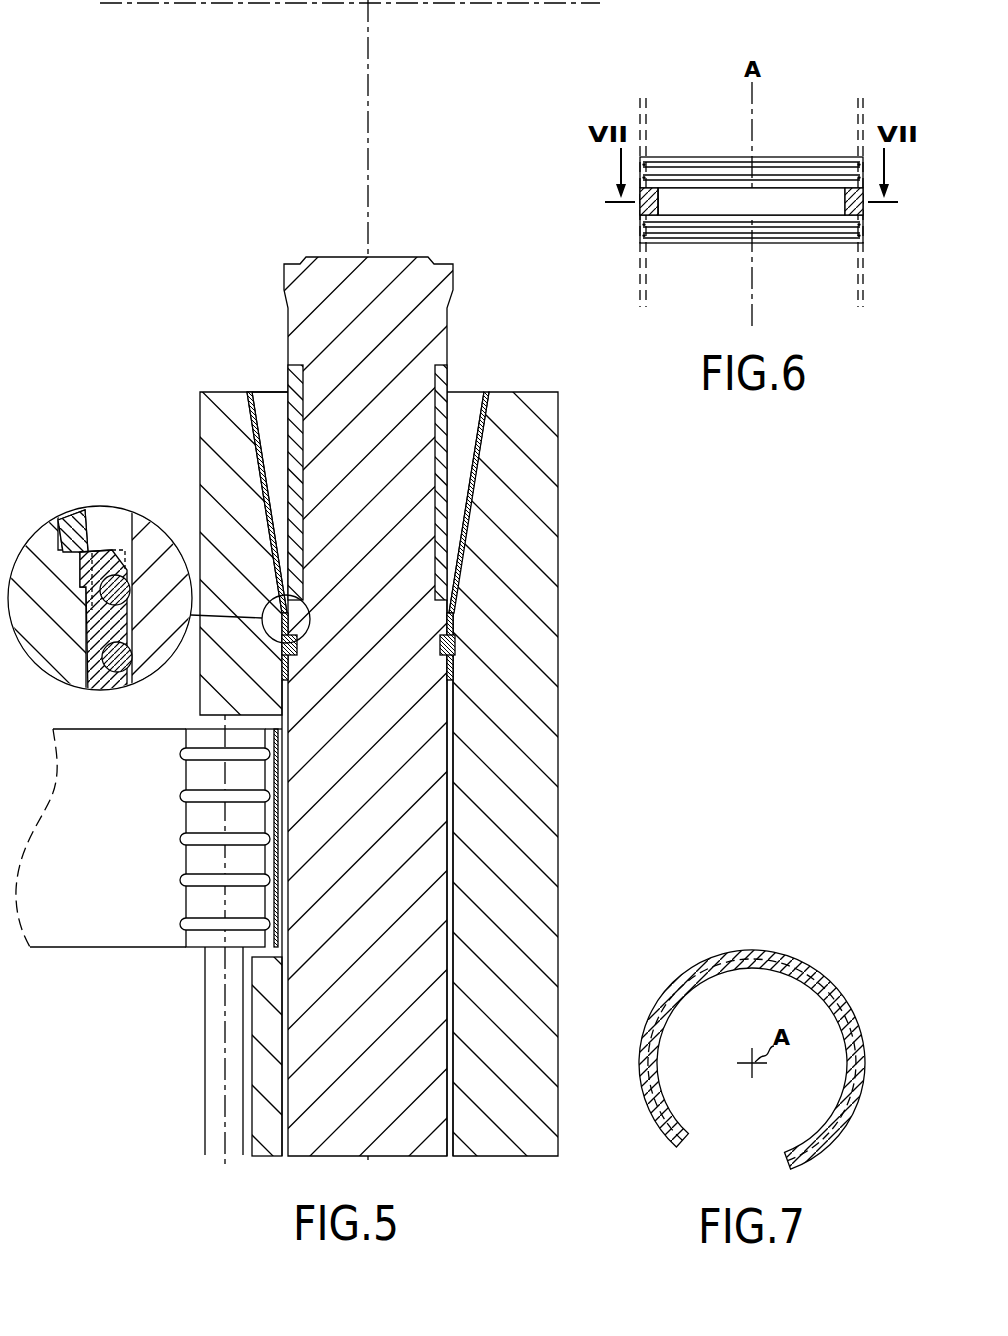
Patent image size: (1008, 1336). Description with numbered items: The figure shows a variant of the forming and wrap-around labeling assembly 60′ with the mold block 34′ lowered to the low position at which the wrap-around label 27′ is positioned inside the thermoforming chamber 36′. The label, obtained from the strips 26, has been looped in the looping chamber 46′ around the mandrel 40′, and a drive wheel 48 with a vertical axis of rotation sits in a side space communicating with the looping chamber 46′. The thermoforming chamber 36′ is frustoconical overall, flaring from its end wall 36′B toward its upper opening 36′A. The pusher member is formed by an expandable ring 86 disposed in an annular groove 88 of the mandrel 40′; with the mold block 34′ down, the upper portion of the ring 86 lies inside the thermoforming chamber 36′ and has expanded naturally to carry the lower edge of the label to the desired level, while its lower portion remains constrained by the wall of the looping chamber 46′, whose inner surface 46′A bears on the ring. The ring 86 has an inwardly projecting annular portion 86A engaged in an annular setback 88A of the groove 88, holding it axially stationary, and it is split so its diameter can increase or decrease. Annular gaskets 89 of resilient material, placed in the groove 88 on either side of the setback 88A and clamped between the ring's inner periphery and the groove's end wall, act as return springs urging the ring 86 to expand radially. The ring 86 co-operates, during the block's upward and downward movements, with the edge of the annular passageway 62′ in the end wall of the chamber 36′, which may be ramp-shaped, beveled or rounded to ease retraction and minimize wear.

In FIG. 5, the forming and wrap-around labeling assembly 60′ is at (203, 232).
In FIG. 5, the mandrel 40′ is at (318, 256).
In FIG. 5, the mold block 34′ is at (212, 423).
In FIG. 5, the thermoforming chamber 36′ is at (468, 392).
In FIG. 5, the upper opening 36′A is at (272, 392).
In FIG. 5, the end wall 36′B is at (454, 623).
In FIG. 5, the looping chamber 46′ is at (453, 812).
In FIG. 5, the inner surface of sleeve 46′A is at (454, 858).
In FIG. 5, the annular passageway 62′ is at (278, 564).
In FIG. 5, the wrap-around label 27′ is at (470, 516).
In FIG. 5, the expandable ring 86 is at (458, 644).
In FIG. 6, the expandable ring 86 is at (781, 202).
In FIG. 7, the expandable ring 86 is at (757, 1037).
In FIG. 6, the inwardly projecting annular portion 86A is at (663, 203).
In FIG. 7, the inwardly projecting annular portion 86A is at (762, 952).
In FIG. 5, the annular groove 88 is at (110, 560).
In FIG. 6, the annular groove 88 is at (644, 158).
In FIG. 6, the annular setback 88A is at (662, 208).
In FIG. 5, the annular gaskets 89 is at (126, 650).
In FIG. 6, the annular gaskets 89 is at (858, 178).
In FIG. 5, the drive wheel 48 is at (198, 818).
In FIG. 5, the strips 26 is at (88, 946).